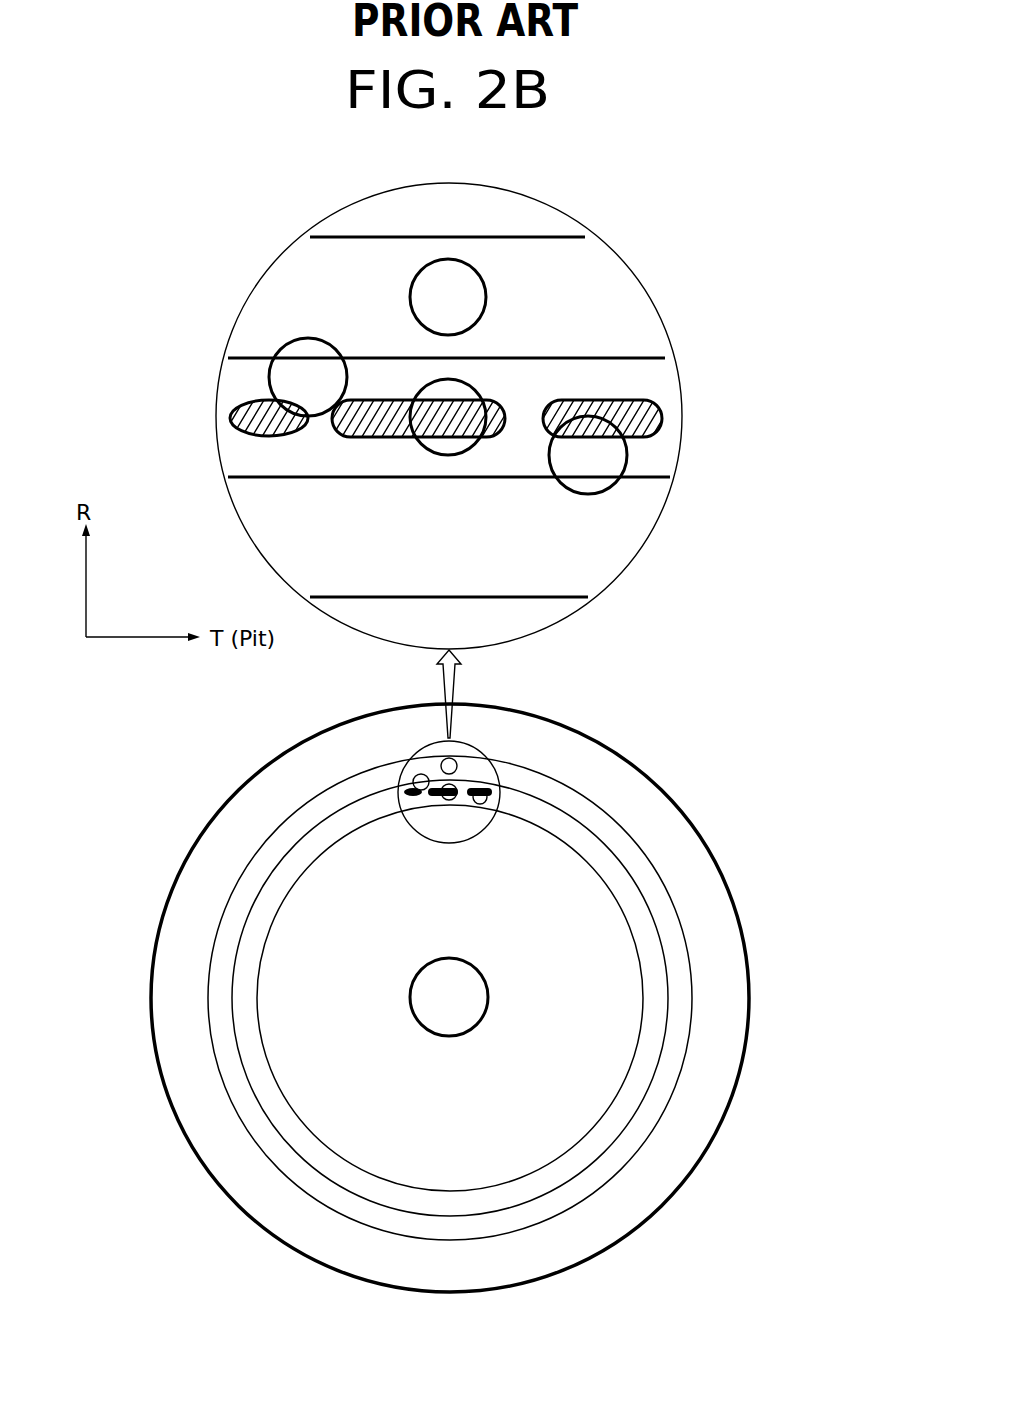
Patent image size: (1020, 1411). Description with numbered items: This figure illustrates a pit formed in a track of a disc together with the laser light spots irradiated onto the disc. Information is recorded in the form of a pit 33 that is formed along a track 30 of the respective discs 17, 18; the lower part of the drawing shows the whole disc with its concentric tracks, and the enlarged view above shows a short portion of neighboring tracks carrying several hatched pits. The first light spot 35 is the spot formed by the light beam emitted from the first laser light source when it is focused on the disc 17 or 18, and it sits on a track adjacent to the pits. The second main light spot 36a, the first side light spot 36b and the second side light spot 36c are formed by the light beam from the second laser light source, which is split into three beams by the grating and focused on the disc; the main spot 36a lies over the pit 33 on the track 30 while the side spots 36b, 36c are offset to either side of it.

The disc 17 is at (465, 998).
The disc 18 is at (700, 828).
The track 30 is at (652, 376).
The pit 33 is at (648, 420).
The first light spot 35 is at (487, 295).
The second main light spot 36a is at (448, 455).
The first side light spot 36b is at (270, 373).
The second side light spot 36c is at (622, 464).